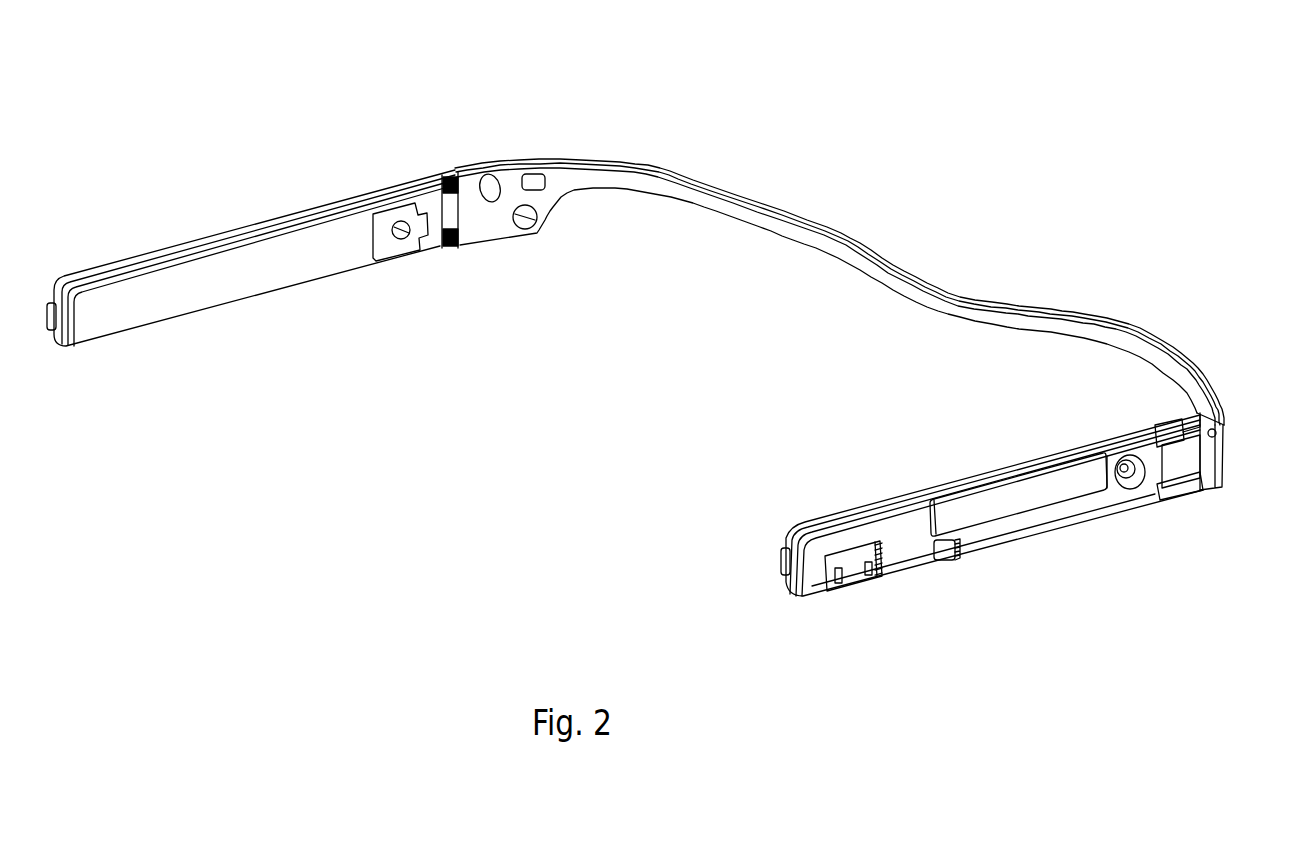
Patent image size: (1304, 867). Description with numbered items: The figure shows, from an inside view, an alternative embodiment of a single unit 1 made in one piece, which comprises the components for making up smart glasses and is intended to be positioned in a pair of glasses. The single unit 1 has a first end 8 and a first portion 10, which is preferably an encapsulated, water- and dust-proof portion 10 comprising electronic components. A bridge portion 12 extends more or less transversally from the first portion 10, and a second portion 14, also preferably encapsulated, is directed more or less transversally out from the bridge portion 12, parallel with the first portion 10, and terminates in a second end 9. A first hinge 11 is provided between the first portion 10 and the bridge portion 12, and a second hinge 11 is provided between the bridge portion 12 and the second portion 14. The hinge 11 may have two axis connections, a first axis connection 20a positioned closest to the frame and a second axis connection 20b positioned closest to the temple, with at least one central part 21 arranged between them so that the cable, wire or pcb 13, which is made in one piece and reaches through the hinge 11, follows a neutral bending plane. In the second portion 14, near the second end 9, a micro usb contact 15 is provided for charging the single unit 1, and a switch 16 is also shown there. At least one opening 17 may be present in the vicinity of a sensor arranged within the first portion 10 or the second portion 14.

The single unit 1 is at (578, 148).
The first end 8 is at (60, 338).
The second end 9 is at (800, 592).
The first portion 10 is at (253, 263).
The hinge 11 is at (450, 180).
The bridge portion 12 is at (778, 213).
The pcb 13 is at (452, 238).
The second portion 14 is at (902, 518).
The micro usb contact 15 is at (857, 578).
The switch 16 is at (945, 558).
The opening 17 is at (1002, 497).
The first axis connection 20a is at (1187, 423).
The second axis connection 20b is at (1155, 430).
The central part 21 is at (1187, 458).